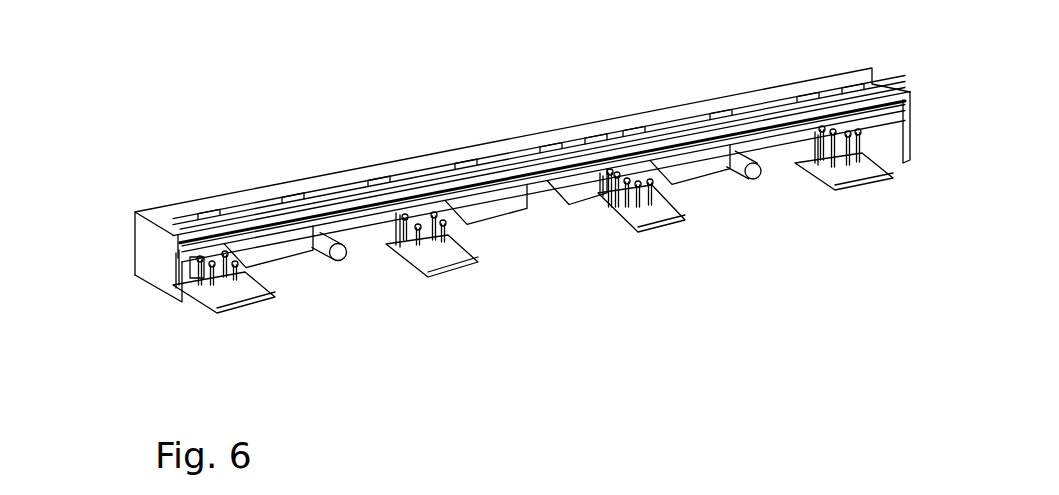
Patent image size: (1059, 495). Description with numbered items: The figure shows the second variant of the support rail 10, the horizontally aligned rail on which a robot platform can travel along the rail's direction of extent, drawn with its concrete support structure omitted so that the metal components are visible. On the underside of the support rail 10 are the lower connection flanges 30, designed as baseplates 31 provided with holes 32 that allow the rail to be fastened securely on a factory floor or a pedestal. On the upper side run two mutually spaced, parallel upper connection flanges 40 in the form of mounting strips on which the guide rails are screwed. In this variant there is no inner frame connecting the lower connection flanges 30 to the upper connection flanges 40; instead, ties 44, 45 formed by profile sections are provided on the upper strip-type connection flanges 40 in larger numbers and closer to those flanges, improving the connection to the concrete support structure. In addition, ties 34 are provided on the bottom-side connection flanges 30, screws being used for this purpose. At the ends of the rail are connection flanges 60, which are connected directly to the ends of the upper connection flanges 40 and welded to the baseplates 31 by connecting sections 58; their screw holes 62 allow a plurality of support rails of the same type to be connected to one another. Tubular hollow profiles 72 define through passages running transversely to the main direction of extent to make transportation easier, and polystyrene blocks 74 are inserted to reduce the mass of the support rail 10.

The support rail 10 is at (131, 102).
The connection flanges 30 is at (245, 292).
The baseplates 31 is at (497, 210).
The holes 32 is at (242, 298).
The ties 34 is at (202, 282).
The upper connection flanges 40 is at (265, 193).
The tie 44 is at (168, 231).
The tie 45 is at (214, 211).
The connecting sections 58 is at (192, 287).
The connection flanges 60 is at (158, 265).
The screw holes 62 is at (175, 285).
The tubular hollow profiles 72 is at (738, 161).
The polystyrene blocks 74 is at (497, 204).